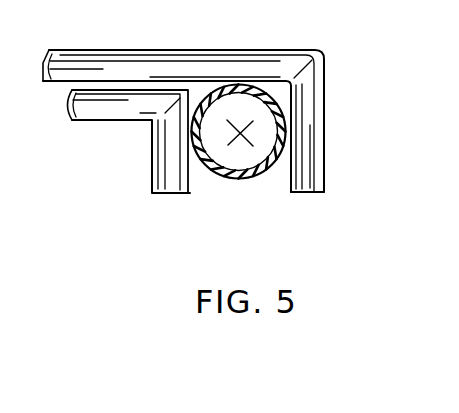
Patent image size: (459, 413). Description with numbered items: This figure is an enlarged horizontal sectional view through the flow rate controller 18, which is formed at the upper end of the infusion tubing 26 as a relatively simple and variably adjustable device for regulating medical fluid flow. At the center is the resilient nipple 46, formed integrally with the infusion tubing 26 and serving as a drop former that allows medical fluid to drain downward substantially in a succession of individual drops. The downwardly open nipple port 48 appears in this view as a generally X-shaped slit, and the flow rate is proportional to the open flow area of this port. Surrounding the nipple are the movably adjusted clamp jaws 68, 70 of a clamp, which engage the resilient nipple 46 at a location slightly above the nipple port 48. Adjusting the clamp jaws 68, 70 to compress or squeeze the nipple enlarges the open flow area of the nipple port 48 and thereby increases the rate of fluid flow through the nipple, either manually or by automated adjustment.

The flow rate controller 18 is at (184, 42).
The infusion tubing 26 is at (194, 148).
The resilient nipple 46 is at (233, 156).
The nipple port 48 is at (250, 140).
The clamp jaw 68 is at (162, 182).
The clamp jaw 70 is at (308, 187).